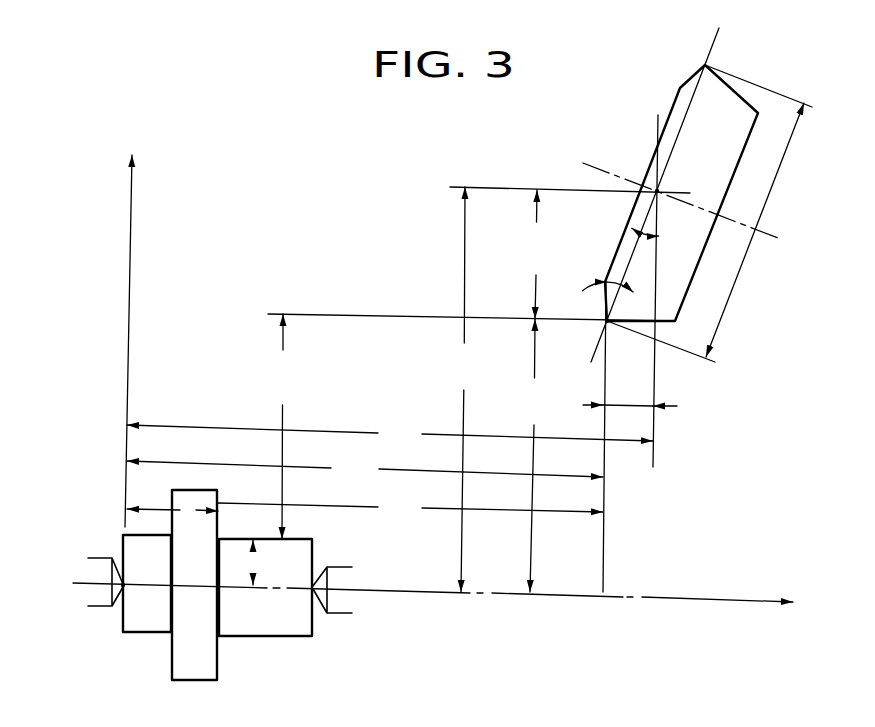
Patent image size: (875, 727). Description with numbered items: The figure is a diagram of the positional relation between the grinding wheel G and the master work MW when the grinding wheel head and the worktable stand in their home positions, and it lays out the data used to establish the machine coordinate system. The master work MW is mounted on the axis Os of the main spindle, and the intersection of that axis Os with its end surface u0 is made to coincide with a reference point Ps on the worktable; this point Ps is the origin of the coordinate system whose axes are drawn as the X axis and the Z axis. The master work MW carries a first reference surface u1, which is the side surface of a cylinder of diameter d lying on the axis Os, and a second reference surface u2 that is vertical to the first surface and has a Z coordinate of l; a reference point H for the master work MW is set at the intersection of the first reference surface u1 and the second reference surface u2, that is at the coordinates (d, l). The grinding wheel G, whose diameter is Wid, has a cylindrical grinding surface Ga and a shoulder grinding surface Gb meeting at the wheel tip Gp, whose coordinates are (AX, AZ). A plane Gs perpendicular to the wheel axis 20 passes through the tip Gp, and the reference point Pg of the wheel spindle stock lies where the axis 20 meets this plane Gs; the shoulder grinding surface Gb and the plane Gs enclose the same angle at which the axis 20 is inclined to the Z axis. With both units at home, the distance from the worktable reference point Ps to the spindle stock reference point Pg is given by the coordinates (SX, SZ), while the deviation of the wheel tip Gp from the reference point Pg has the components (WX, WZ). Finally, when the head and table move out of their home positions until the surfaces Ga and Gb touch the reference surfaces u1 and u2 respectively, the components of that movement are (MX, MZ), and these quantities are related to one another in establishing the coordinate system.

The axis of the grinding wheel 20 is at (778, 238).
The plane Gs is at (673, 182).
The grinding wheel G is at (676, 97).
The reference point on the wheel spindle stock Pg is at (655, 189).
The shoulder grinding surface Gb is at (604, 282).
The tip of the wheel Gp is at (606, 322).
The cylindrical grinding surface Ga is at (662, 323).
The diameter of the grinding wheel Wid is at (709, 213).
The X component of deviation ΔW WX is at (537, 254).
The X coordinate of reference point Pg SX is at (569, 389).
The X coordinate of the wheel tip AX is at (534, 455).
The X component of amount of movement ΔM MX is at (470, 426).
The Z component of deviation ΔW WZ is at (630, 389).
The Z coordinate of reference point Pg SZ is at (390, 433).
The Z coordinate of the wheel tip AZ is at (365, 469).
The Z component of amount of movement ΔM MZ is at (410, 509).
The master work MW is at (304, 637).
The reference point on the worktable Ps is at (123, 587).
The axis of the main spindle Os is at (540, 595).
The end surface of the master work u0 is at (123, 545).
The first reference surface u1 is at (297, 541).
The second reference surface u2 is at (219, 502).
The reference point for the master work H is at (220, 540).
The Z coordinate of the second reference surface l is at (172, 512).
The diameter of the cylinder d is at (251, 562).
The X-axis X is at (117, 340).
The Z-axis Z is at (433, 613).